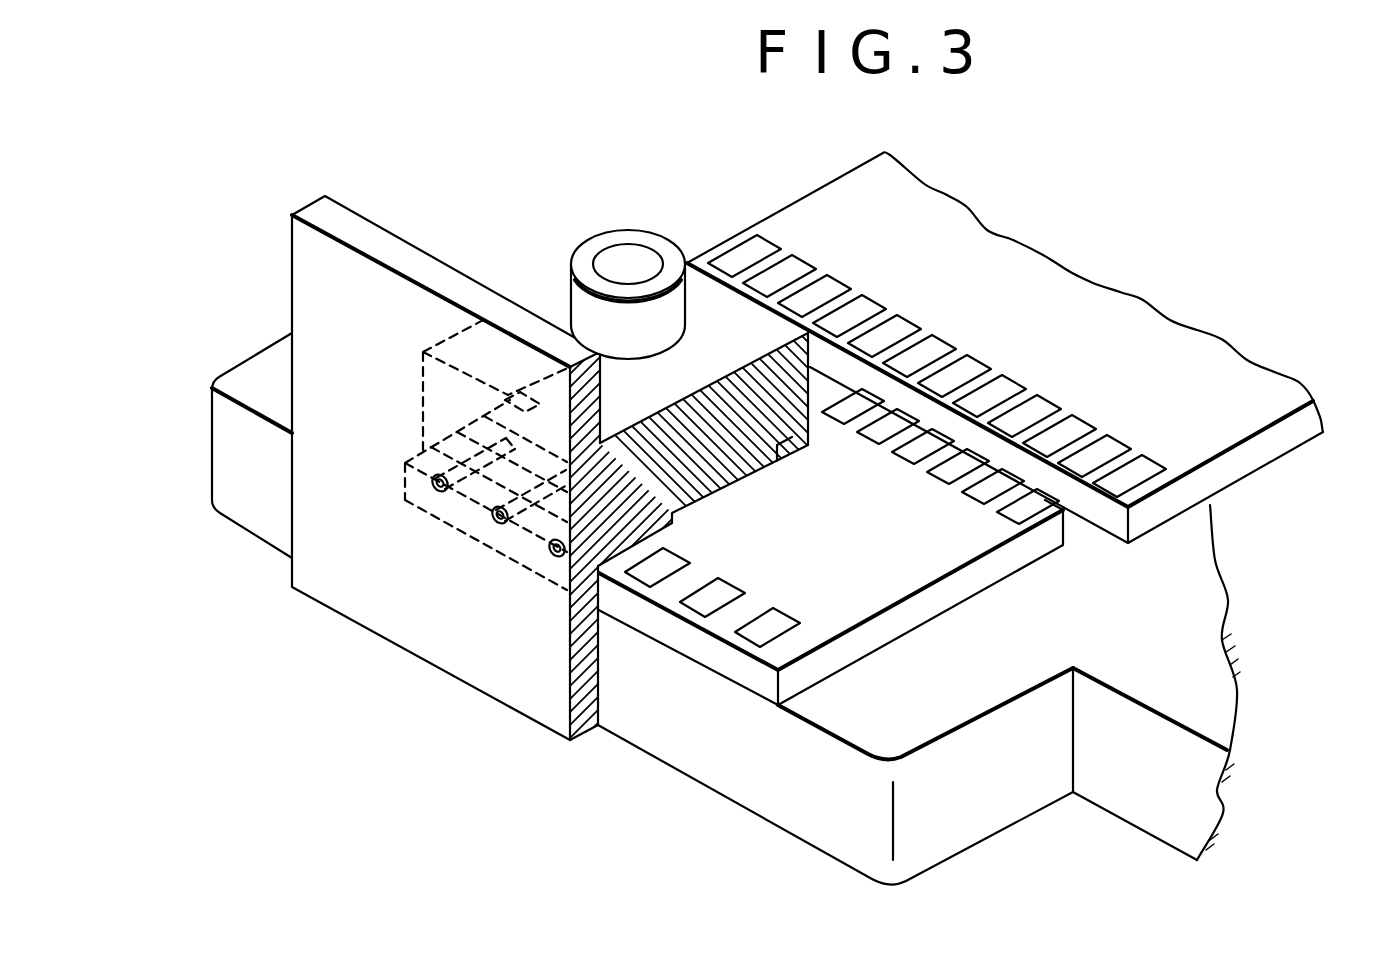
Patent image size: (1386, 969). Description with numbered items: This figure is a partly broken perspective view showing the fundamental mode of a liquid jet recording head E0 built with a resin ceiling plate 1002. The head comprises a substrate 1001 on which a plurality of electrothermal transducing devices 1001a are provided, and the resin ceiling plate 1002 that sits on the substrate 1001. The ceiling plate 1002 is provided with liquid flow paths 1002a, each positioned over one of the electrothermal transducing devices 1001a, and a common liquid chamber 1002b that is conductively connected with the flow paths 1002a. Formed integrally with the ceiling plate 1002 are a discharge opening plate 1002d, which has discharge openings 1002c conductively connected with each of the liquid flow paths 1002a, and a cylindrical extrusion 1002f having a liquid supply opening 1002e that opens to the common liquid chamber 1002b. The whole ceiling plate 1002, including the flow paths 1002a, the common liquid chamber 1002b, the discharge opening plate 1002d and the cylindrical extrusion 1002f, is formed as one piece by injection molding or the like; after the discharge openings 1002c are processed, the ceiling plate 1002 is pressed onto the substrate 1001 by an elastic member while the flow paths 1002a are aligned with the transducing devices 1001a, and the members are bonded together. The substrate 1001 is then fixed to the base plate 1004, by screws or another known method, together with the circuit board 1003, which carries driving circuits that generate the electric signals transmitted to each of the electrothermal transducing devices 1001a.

The liquid jet recording head E0 is at (304, 172).
The substrate 1001 is at (908, 613).
The electrothermal transducing devices 1001a is at (703, 600).
The resin ceiling plate 1002 is at (537, 300).
The liquid flow paths 1002a is at (567, 587).
The common liquid chamber 1002b is at (757, 462).
The discharge openings 1002c is at (437, 483).
The discharge opening plate 1002d is at (438, 623).
The liquid supply opening 1002e is at (620, 262).
The cylindrical extrusion 1002f is at (662, 248).
The circuit board 1003 is at (1228, 470).
The base plate 1004 is at (1115, 725).